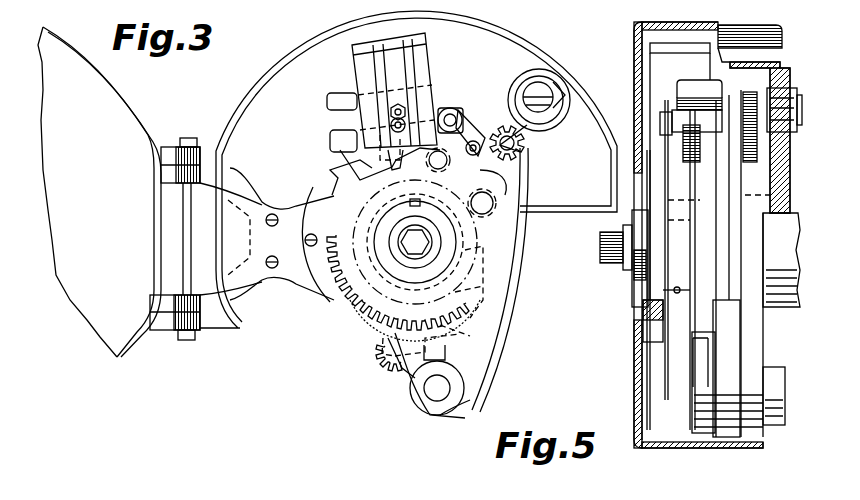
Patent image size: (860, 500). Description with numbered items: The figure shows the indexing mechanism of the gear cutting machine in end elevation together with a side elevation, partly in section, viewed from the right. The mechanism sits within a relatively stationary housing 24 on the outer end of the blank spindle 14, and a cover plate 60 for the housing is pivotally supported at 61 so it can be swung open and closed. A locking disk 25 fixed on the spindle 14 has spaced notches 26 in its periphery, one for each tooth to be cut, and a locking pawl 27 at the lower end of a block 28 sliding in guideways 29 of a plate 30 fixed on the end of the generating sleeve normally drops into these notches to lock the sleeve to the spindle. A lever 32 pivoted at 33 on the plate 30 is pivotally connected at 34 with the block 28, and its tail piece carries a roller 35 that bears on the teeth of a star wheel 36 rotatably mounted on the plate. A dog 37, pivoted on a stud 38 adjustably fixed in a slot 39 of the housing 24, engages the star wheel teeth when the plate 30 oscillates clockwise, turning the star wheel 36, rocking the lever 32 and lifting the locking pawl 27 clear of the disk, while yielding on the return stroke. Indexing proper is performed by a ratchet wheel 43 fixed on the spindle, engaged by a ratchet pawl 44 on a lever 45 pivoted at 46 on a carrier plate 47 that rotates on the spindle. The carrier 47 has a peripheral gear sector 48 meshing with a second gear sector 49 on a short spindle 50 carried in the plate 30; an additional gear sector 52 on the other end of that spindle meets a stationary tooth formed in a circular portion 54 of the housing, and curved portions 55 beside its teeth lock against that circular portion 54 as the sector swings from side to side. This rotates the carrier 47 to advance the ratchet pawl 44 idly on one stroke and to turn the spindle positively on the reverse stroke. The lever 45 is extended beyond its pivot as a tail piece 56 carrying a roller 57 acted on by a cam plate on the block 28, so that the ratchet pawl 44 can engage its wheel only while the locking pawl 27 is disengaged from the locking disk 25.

In FIG. 3, the spindle 14 is at (412, 247).
In FIG. 5, the spindle 14 is at (630, 275).
In FIG. 3, the housing 24 is at (322, 50).
In FIG. 5, the housing 24 is at (634, 47).
In FIG. 3, the locking disk 25 is at (356, 181).
In FIG. 5, the locking disk 25 is at (655, 300).
In FIG. 3, the notches 26 is at (356, 175).
In FIG. 5, the notches 26 is at (670, 280).
In FIG. 3, the locking pawl 27 is at (397, 167).
In FIG. 3, the block 28 is at (393, 63).
In FIG. 3, the guideways 29 is at (366, 63).
In FIG. 5, the guideways 29 is at (660, 68).
In FIG. 3, the plate 30 is at (340, 118).
In FIG. 5, the plate 30 is at (698, 77).
In FIG. 3, the lever 32 is at (404, 106).
In FIG. 3, the pivot 33 is at (452, 118).
In FIG. 5, the pivot 33 is at (660, 118).
In FIG. 3, the pivotal connection 34 is at (391, 125).
In FIG. 3, the roller 35 is at (477, 142).
In FIG. 3, the star wheel 36 is at (518, 160).
In FIG. 5, the star wheel 36 is at (700, 142).
In FIG. 3, the dog 37 is at (545, 128).
In FIG. 5, the dog 37 is at (765, 170).
In FIG. 3, the stud 38 is at (537, 88).
In FIG. 5, the stud 38 is at (728, 75).
In FIG. 3, the slot 39 is at (552, 103).
In FIG. 3, the ratchet wheel 43 is at (495, 305).
In FIG. 3, the ratchet pawl 44 is at (500, 272).
In FIG. 3, the lever 45 is at (490, 328).
In FIG. 5, the lever 45 is at (682, 250).
In FIG. 3, the pivot 46 is at (492, 207).
In FIG. 3, the carrier plate 47 is at (335, 278).
In FIG. 5, the carrier plate 47 is at (697, 252).
In FIG. 3, the gear sector 48 is at (366, 322).
In FIG. 5, the gear sector 48 is at (700, 337).
In FIG. 3, the second gear sector 49 is at (373, 379).
In FIG. 5, the second gear sector 49 is at (703, 376).
In FIG. 3, the short spindle 50 is at (437, 390).
In FIG. 3, the additional gear sector 52 is at (400, 372).
In FIG. 5, the additional gear sector 52 is at (748, 367).
In FIG. 3, the circular portion 54 is at (485, 288).
In FIG. 5, the circular portion 54 is at (752, 300).
In FIG. 3, the curved portions 55 is at (470, 340).
In FIG. 3, the tail piece 56 is at (433, 186).
In FIG. 3, the roller 57 is at (430, 162).
In FIG. 3, the cover plate 60 is at (88, 297).
In FIG. 3, the pivot 61 is at (174, 316).